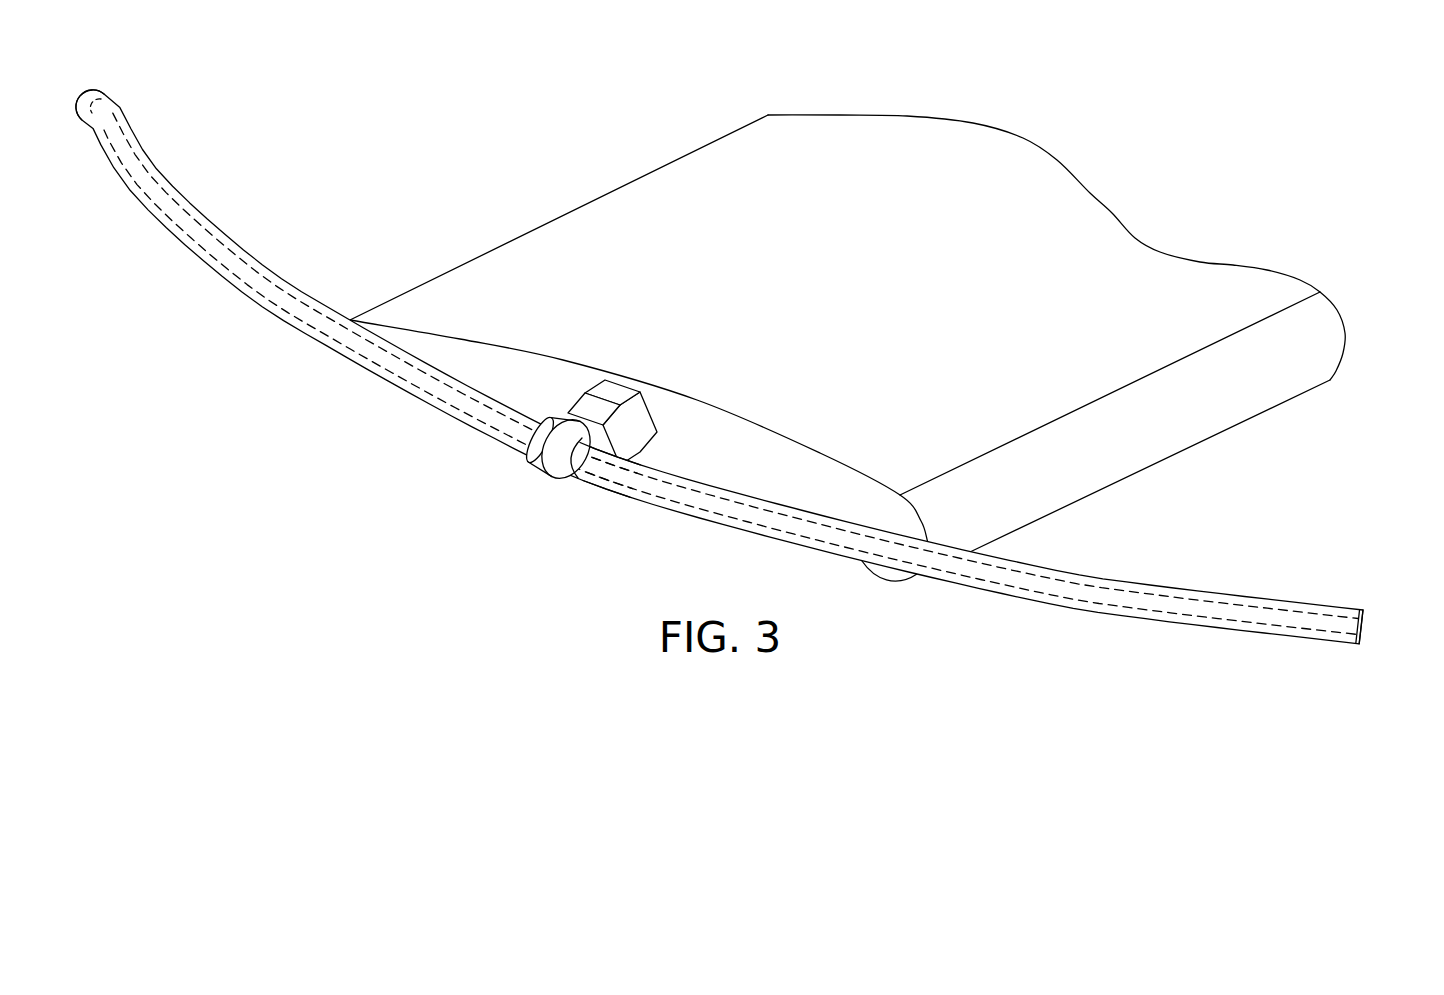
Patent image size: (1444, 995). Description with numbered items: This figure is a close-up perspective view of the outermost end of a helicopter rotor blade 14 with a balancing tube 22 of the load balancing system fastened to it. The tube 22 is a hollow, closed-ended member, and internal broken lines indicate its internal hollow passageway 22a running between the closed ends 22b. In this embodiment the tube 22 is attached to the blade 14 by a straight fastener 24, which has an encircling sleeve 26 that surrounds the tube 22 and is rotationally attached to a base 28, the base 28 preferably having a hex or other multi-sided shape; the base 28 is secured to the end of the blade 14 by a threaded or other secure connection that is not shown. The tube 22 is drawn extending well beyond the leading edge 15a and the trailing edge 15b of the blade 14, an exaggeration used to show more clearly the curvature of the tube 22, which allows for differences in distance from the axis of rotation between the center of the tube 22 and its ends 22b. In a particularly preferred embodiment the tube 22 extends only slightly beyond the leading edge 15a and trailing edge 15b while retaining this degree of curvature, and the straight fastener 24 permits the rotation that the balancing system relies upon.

The blade 14 is at (847, 322).
The leading edge 15a is at (1167, 428).
The trailing edge 15b is at (505, 243).
The tube 22 is at (752, 343).
The internal hollow passageway 22a is at (346, 338).
The closed ends 22b is at (95, 93).
The straight fastener 24 is at (752, 343).
The encircling sleeve 26 is at (544, 463).
The base 28 is at (640, 418).